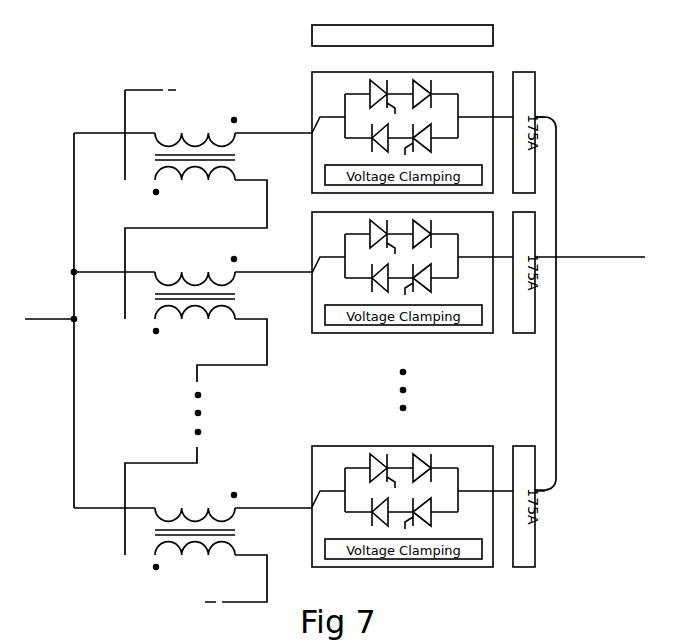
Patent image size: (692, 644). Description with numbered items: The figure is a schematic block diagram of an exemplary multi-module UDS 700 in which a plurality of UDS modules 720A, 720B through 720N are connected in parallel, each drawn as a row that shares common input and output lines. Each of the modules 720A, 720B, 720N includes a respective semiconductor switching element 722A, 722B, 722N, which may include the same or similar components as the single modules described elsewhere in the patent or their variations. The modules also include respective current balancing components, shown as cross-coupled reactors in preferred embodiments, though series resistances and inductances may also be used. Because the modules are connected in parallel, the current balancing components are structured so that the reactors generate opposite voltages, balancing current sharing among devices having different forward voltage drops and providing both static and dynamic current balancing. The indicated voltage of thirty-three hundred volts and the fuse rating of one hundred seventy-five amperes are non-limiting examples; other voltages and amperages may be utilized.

The multi-module UDS 700 is at (627, 69).
The UDS module 720A is at (125, 94).
The UDS module 720B is at (125, 230).
The UDS module 720N is at (125, 527).
The semiconductor switching element 722A is at (489, 72).
The semiconductor switching element 722B is at (471, 334).
The semiconductor switching element 722N is at (471, 567).